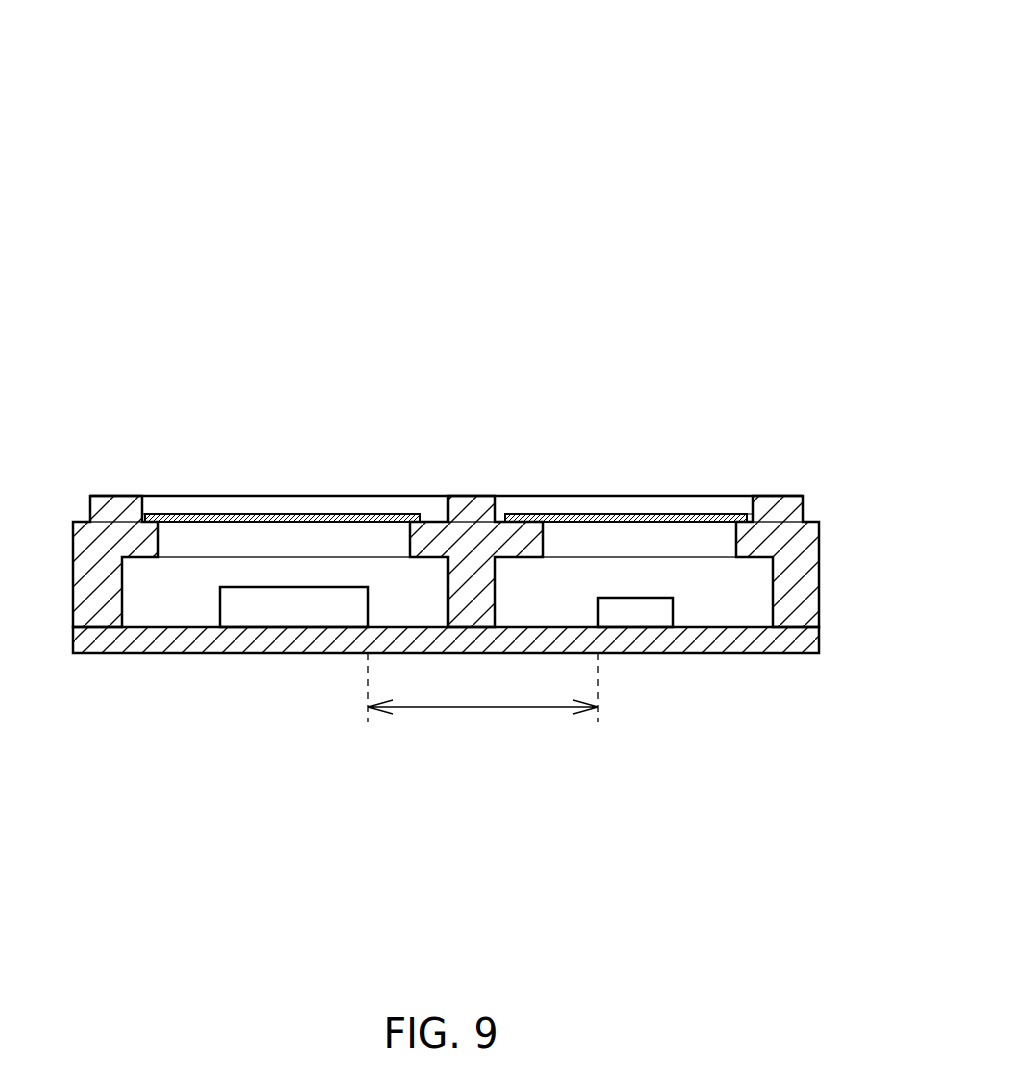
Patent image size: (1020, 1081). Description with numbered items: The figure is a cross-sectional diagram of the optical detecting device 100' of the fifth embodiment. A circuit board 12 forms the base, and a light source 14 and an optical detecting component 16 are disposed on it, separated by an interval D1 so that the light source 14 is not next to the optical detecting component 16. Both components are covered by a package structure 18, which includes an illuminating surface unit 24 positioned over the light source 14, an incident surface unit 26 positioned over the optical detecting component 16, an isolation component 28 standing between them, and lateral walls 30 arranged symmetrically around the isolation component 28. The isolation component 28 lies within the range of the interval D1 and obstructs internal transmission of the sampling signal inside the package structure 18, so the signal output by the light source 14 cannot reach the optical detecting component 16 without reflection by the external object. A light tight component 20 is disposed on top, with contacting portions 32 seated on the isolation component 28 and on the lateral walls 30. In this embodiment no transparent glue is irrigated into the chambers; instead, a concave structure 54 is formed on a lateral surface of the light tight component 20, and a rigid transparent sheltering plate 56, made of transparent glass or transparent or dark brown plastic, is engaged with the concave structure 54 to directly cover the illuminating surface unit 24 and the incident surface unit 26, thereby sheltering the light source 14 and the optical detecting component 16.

The optical detecting device 100' is at (784, 63).
The circuit board 12 is at (703, 638).
The light source 14 is at (642, 612).
The optical detecting component 16 is at (292, 607).
The package structure 18 is at (446, 577).
The light tight component 20 is at (790, 338).
The illuminating surface unit 24 is at (643, 545).
The incident surface unit 26 is at (292, 545).
The isolation component 28 is at (470, 600).
The lateral wall 30 is at (97, 612).
The contacting portion 32 is at (123, 497).
The concave structure 54 is at (144, 514).
The transparent sheltering plate 56 is at (222, 497).
The interval D1 is at (483, 687).